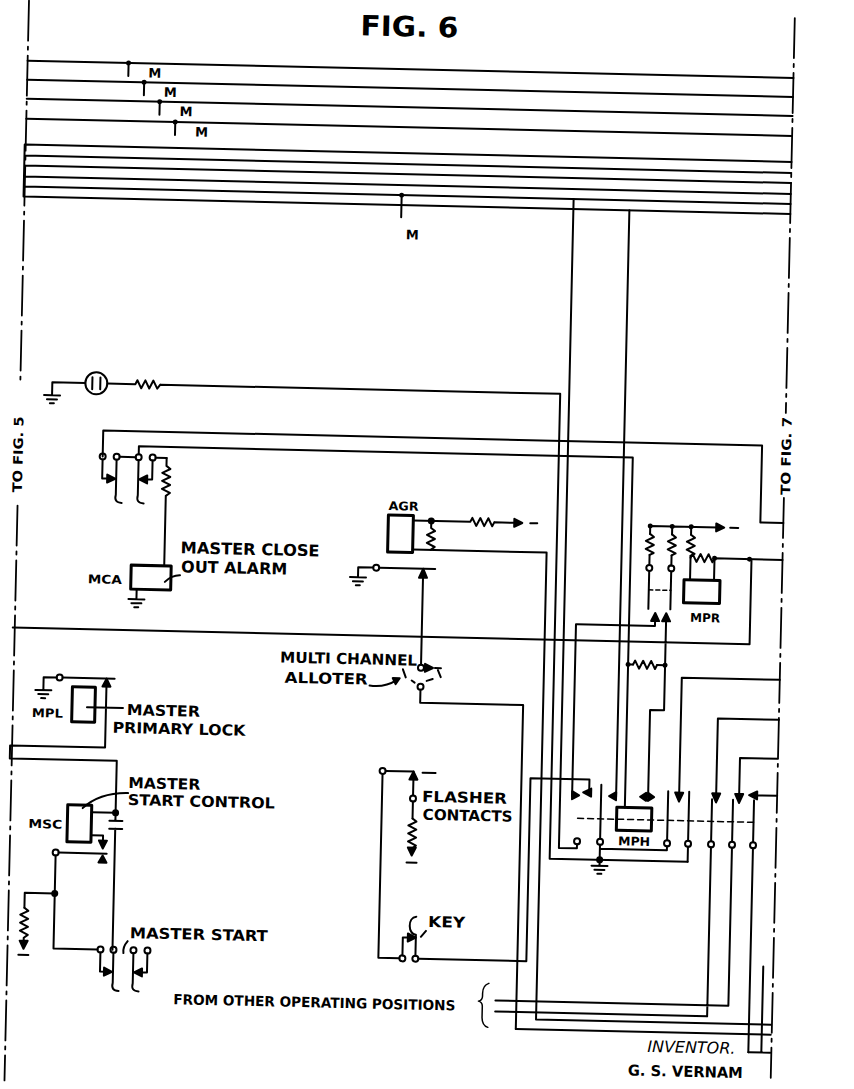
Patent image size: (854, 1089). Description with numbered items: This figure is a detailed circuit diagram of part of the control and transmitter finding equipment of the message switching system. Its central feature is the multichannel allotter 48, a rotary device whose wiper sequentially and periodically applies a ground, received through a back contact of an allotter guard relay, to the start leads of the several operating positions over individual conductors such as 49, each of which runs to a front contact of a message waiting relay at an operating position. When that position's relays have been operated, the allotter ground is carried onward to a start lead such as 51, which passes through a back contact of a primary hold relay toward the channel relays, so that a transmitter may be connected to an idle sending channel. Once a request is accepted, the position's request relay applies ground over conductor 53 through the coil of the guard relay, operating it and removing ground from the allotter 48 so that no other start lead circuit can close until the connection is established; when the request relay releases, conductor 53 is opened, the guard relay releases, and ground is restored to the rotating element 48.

The allotter 48 is at (448, 675).
The individual conductor 49 is at (604, 1018).
The start lead 51 is at (761, 1001).
The conductor 53 is at (653, 1000).